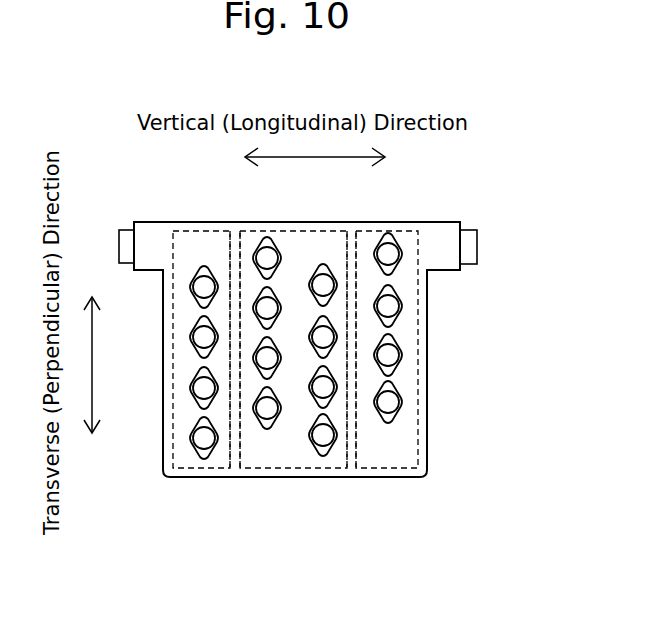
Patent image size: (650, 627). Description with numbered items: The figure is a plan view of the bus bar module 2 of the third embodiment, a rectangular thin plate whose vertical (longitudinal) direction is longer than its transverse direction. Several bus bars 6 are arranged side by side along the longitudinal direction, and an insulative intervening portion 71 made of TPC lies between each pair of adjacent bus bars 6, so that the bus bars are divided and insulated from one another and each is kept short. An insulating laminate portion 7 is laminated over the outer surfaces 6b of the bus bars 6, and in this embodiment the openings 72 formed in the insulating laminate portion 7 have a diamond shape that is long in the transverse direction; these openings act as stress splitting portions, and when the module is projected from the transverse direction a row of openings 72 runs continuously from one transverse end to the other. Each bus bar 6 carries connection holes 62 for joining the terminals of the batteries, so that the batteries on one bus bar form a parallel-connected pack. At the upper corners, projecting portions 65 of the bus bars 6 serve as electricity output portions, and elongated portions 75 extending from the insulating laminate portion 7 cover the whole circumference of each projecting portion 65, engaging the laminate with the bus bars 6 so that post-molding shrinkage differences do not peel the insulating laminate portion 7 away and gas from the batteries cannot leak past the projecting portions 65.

The bus bar module 2 is at (442, 502).
The bus bar 6 is at (342, 360).
The outer surface 6b is at (267, 240).
The insulating laminate portion 7 is at (174, 460).
The connection hole 62 is at (395, 318).
The projecting portion 65 is at (477, 250).
The insulative intervening portion 71 is at (233, 317).
The opening 72 is at (392, 304).
The elongated portion 75 is at (442, 232).